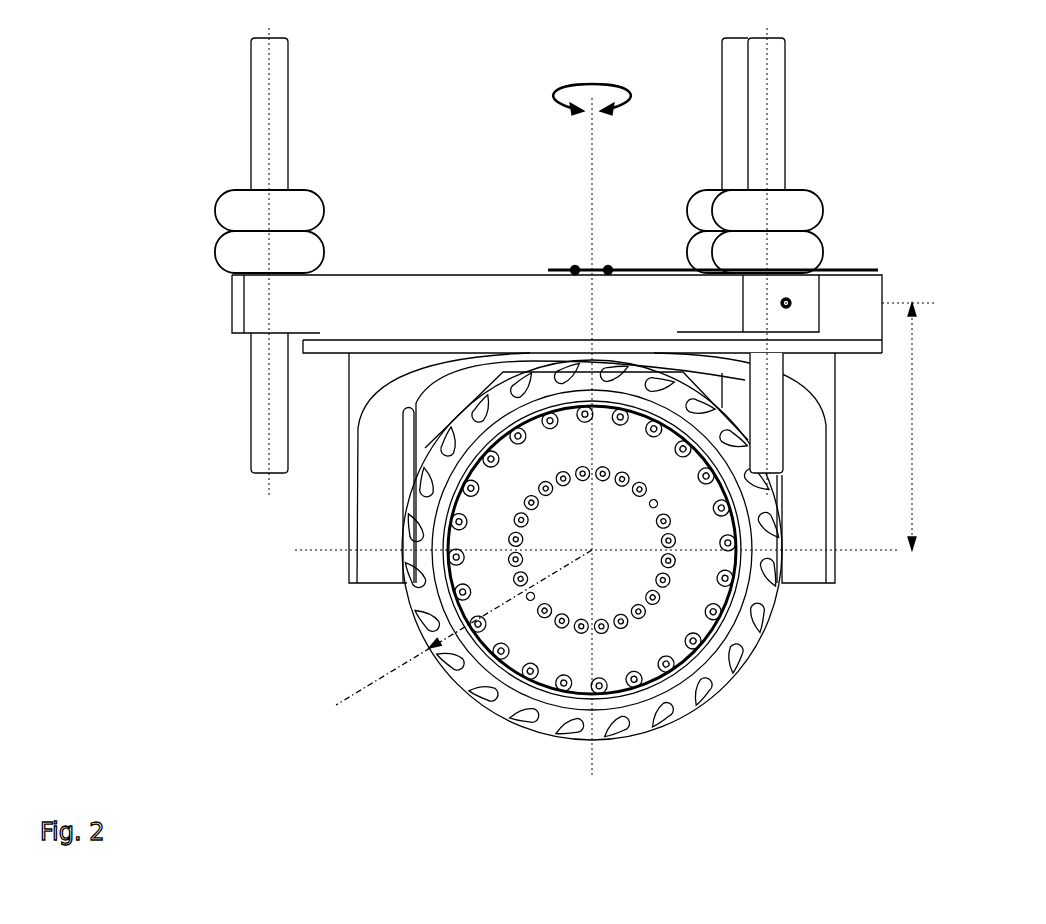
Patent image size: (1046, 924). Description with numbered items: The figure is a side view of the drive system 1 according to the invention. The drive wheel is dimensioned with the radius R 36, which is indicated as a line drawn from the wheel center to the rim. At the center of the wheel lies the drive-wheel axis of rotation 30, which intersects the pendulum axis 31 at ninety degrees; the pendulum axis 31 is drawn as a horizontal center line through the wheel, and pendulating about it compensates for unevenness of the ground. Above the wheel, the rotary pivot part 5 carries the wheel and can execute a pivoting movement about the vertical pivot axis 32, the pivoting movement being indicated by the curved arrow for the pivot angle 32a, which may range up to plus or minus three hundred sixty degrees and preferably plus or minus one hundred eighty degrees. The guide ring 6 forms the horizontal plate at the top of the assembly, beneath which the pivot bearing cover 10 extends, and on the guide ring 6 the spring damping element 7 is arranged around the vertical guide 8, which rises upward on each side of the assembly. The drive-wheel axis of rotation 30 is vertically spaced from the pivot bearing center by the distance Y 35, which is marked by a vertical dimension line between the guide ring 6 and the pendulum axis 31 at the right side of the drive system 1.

The drive system 1 is at (205, 290).
The rotary pivot part 5 is at (368, 527).
The guide ring 6 is at (372, 310).
The spring damping element 7 is at (243, 222).
The vertical guide 8 is at (285, 167).
The pivot bearing cover 10 is at (335, 346).
The drive-wheel axis of rotation 30 is at (592, 550).
The pendulum axis 31 is at (330, 550).
The pivot axis 32 is at (588, 262).
The pivot angle 32a is at (548, 98).
The distance Y 35 is at (892, 448).
The radius R 36 is at (378, 672).